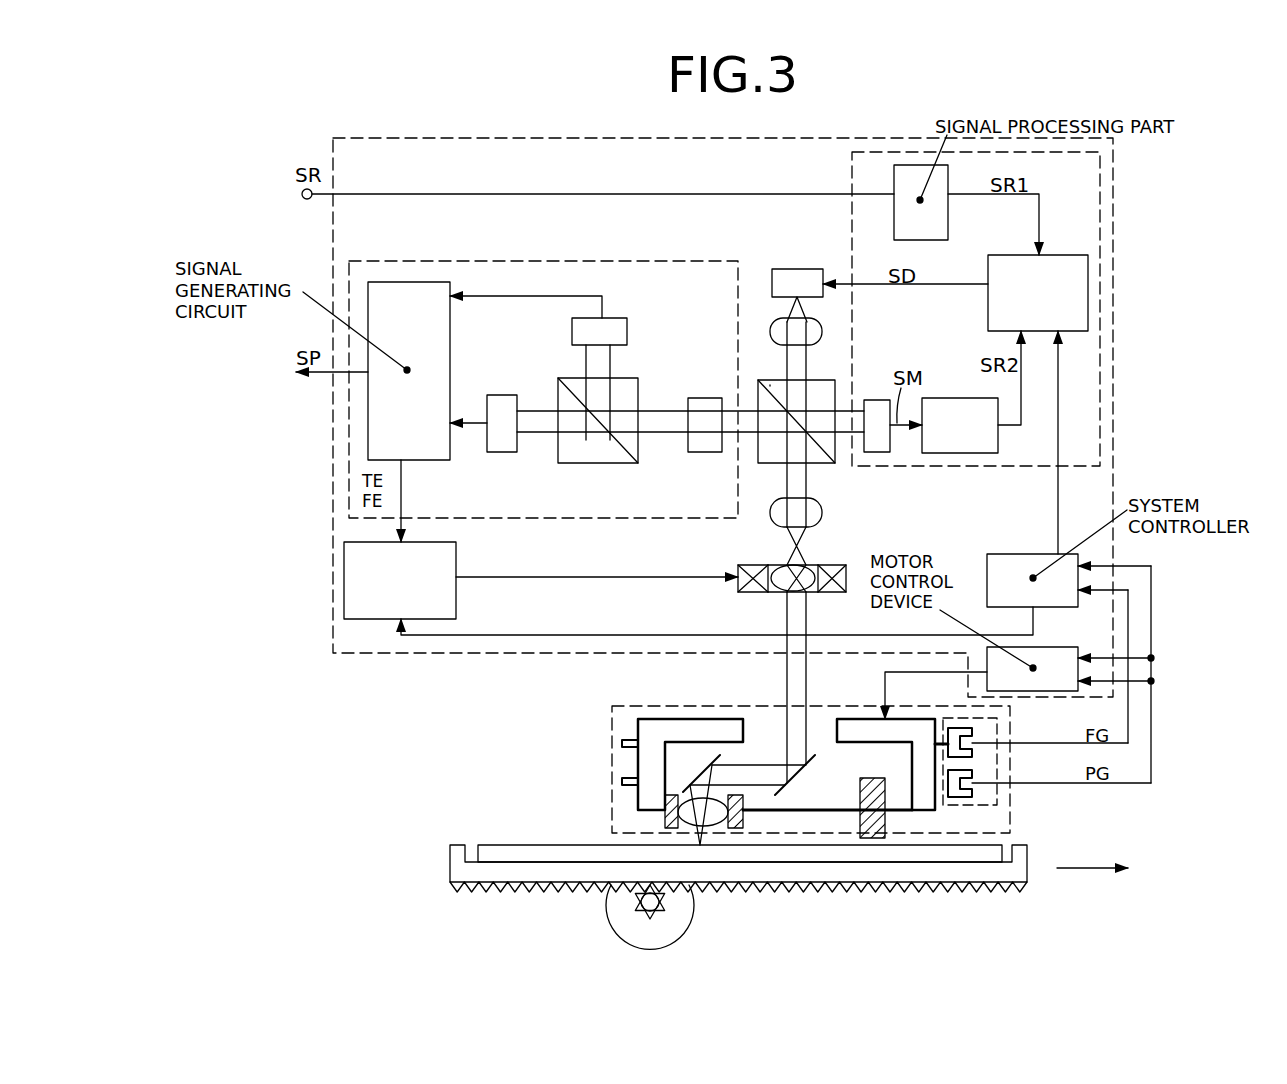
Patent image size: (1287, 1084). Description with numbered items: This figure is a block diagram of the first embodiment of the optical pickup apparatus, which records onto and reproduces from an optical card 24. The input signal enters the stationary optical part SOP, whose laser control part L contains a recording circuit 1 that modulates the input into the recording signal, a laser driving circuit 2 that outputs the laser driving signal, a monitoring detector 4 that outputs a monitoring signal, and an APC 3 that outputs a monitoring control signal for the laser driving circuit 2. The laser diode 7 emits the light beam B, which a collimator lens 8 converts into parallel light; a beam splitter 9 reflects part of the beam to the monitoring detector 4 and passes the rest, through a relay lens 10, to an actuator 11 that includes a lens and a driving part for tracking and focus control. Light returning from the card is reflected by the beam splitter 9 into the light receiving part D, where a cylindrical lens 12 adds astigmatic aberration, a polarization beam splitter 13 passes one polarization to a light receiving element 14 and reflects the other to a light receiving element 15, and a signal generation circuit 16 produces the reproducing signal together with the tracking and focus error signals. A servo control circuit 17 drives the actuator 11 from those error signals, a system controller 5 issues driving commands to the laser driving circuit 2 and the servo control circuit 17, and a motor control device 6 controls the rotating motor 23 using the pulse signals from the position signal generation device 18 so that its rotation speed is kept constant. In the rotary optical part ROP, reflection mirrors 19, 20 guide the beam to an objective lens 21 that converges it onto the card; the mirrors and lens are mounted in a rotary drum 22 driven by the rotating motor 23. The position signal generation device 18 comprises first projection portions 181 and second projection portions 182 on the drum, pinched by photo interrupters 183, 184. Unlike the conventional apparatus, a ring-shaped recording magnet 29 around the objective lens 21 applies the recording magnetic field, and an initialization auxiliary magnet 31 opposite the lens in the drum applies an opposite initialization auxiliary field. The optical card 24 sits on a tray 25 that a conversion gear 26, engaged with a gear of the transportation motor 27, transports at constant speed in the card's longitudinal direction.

The recording circuit 1 is at (948, 186).
The laser driving circuit 2 is at (1068, 255).
The APC (Automatic Power Controller) 3 is at (942, 398).
The monitoring detector 4 is at (876, 400).
The system controller 5 is at (1020, 554).
The motor control device 6 is at (1055, 647).
The laser diode 7 is at (808, 269).
The collimator lens 8 is at (775, 325).
The beam splitter 9 is at (825, 380).
The lens 10 is at (822, 515).
The actuator 11 is at (740, 565).
The cylindrical lens 12 is at (700, 398).
The polarization beam splitter (PBS) 13 is at (595, 463).
The light receiving element 14 is at (512, 395).
The light receiving element 15 is at (620, 318).
The signal generation circuit 16 is at (450, 348).
The servo control circuit 17 is at (458, 567).
The position signal generation device 18 is at (997, 800).
The reflection mirror 19 is at (800, 770).
The reflection mirror 20 is at (706, 770).
The objective lens 21 is at (736, 825).
The rotary drum 22 is at (645, 735).
The rotating motor 23 is at (673, 720).
The optical card 24 is at (497, 843).
The tray 25 is at (455, 866).
The conversion gear 26 is at (480, 893).
The transportation motor 27 is at (617, 905).
The recording magnet 29 is at (672, 830).
The initialization auxiliary magnet 31 is at (872, 840).
The first projection portions 181 is at (622, 743).
The second projection portions 182 is at (622, 781).
The photo interrupter 183 is at (972, 733).
The photo interrupter 184 is at (972, 773).
The light beam B is at (785, 378).
The light receiving part D is at (447, 261).
The laser control part L is at (852, 172).
The rotary optical part ROP is at (748, 706).
The stationary optical part SOP is at (383, 653).